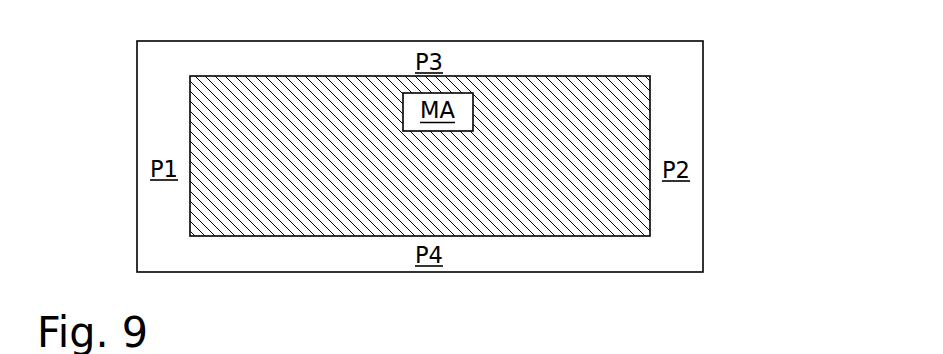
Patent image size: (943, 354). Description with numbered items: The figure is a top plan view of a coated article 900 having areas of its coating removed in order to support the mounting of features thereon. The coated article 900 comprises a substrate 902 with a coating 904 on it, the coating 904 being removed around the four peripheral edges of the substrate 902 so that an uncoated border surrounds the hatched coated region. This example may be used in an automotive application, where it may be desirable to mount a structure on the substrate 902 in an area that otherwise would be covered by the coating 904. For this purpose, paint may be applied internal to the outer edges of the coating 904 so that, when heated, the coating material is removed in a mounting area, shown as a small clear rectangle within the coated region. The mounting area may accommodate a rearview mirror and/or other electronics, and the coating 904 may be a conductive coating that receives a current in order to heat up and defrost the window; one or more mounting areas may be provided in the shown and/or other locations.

The coated article 900 is at (726, 66).
The substrate 902 is at (703, 158).
The coating 904 is at (608, 96).